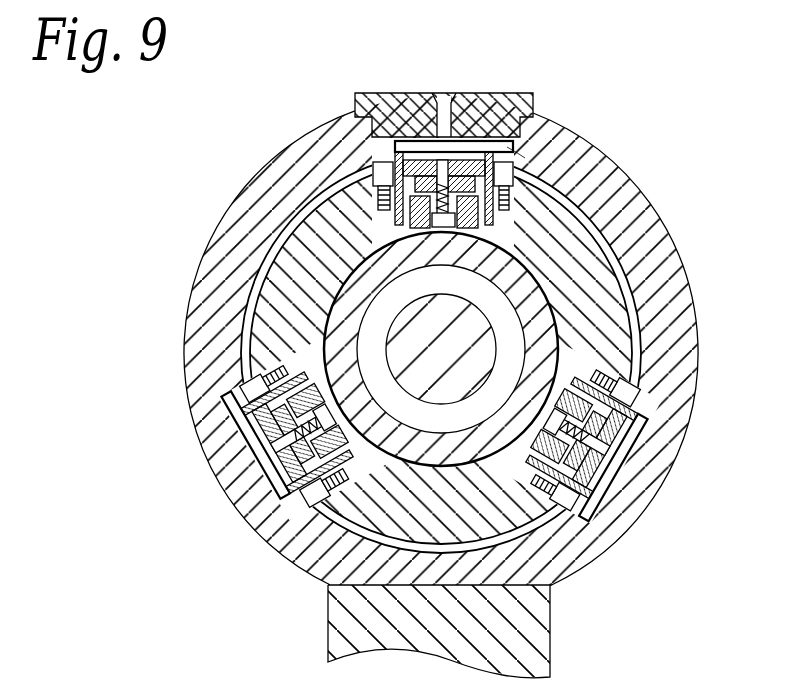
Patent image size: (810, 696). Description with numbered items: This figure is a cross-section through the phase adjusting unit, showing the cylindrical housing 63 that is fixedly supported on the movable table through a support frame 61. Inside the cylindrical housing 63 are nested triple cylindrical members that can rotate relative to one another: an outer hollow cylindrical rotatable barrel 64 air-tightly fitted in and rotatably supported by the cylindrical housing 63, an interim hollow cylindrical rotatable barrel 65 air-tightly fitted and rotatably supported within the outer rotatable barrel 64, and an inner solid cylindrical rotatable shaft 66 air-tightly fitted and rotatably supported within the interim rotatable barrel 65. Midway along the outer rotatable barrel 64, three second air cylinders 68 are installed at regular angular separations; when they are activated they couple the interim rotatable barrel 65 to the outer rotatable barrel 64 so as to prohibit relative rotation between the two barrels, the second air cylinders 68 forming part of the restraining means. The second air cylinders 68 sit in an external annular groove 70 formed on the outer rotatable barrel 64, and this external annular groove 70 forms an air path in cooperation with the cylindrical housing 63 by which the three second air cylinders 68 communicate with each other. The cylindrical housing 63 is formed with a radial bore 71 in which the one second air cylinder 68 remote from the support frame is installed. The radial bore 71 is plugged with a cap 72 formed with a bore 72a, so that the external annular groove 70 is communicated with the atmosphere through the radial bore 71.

The support frame 61 is at (543, 637).
The cylindrical housing 63 is at (676, 246).
The outer hollow cylindrical rotatable barrel 64 is at (607, 298).
The interim hollow cylindrical rotatable barrel 65 is at (475, 270).
The inner solid cylindrical rotatable shaft 66 is at (498, 347).
The second air cylinders 68 is at (394, 141).
The external annular groove 70 is at (641, 374).
The radial bore 71 is at (507, 147).
The cap 72 is at (503, 97).
The bore 72a is at (440, 132).